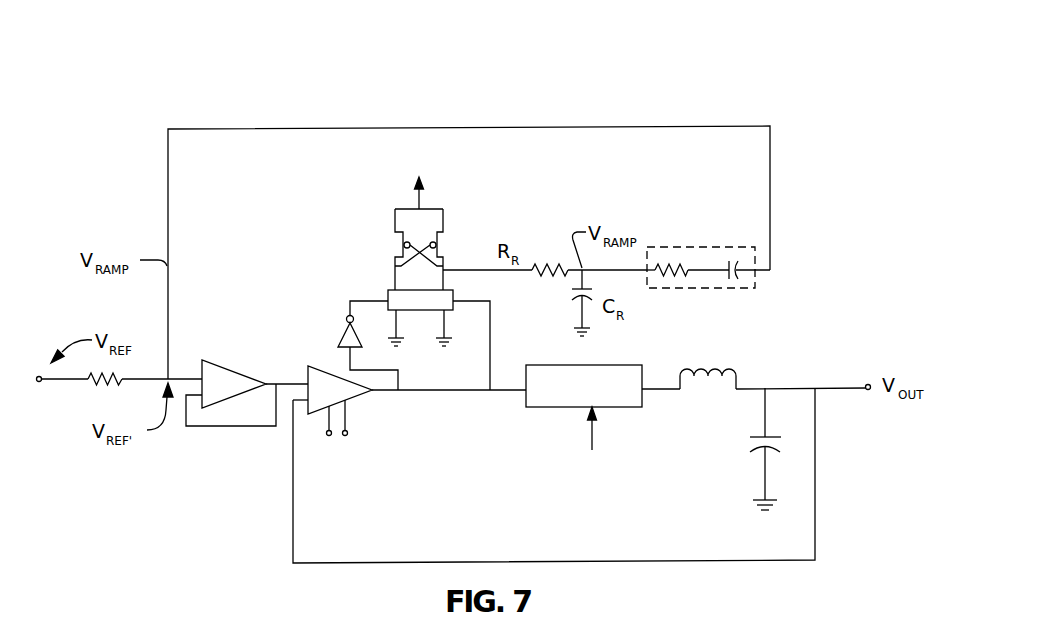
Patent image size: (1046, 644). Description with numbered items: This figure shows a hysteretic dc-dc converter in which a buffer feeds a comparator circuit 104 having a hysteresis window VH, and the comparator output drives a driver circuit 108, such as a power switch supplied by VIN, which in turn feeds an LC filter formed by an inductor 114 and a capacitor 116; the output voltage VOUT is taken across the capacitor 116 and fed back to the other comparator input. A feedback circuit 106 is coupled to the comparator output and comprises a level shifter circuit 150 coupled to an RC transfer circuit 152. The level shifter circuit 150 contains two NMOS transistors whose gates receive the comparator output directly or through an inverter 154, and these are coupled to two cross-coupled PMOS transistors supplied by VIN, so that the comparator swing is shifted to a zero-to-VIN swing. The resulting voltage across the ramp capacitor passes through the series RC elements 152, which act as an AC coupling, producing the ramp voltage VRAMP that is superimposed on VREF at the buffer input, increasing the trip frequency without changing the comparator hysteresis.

The level shifter circuit 150 is at (594, 70).
The feedback circuit 106 is at (368, 197).
The inverter 154 is at (343, 335).
The comparator circuit 104 is at (362, 394).
The driver circuit 108 is at (625, 365).
The inductor 114 is at (734, 368).
The capacitor 116 is at (757, 436).
The RC transfer circuit 152 is at (680, 247).